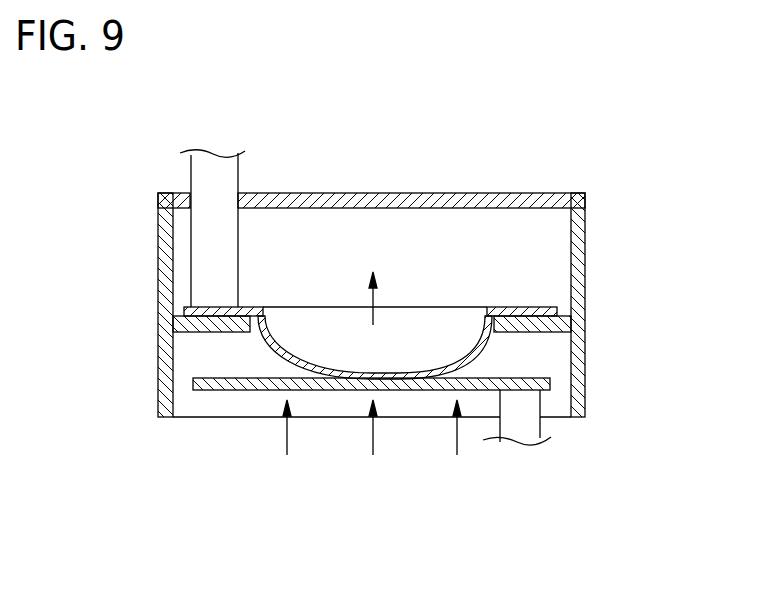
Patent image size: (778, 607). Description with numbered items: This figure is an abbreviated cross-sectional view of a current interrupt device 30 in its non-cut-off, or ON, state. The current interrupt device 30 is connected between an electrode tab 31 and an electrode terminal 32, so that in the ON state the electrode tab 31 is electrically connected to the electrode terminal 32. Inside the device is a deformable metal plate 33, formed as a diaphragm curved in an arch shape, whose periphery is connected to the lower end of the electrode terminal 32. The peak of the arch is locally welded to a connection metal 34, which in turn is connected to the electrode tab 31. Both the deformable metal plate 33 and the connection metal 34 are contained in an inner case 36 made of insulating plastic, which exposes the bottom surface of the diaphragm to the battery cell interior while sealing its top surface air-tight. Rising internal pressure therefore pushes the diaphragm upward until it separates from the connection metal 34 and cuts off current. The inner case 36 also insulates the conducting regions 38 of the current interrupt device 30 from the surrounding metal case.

The current interrupt device 30 is at (478, 148).
The electrode tab 31 is at (530, 428).
The electrode terminal 32 is at (220, 181).
The deformable metal plate 33 is at (318, 375).
The connection metal 34 is at (415, 385).
The inner case 36 is at (578, 278).
The conducting regions 38 is at (445, 515).